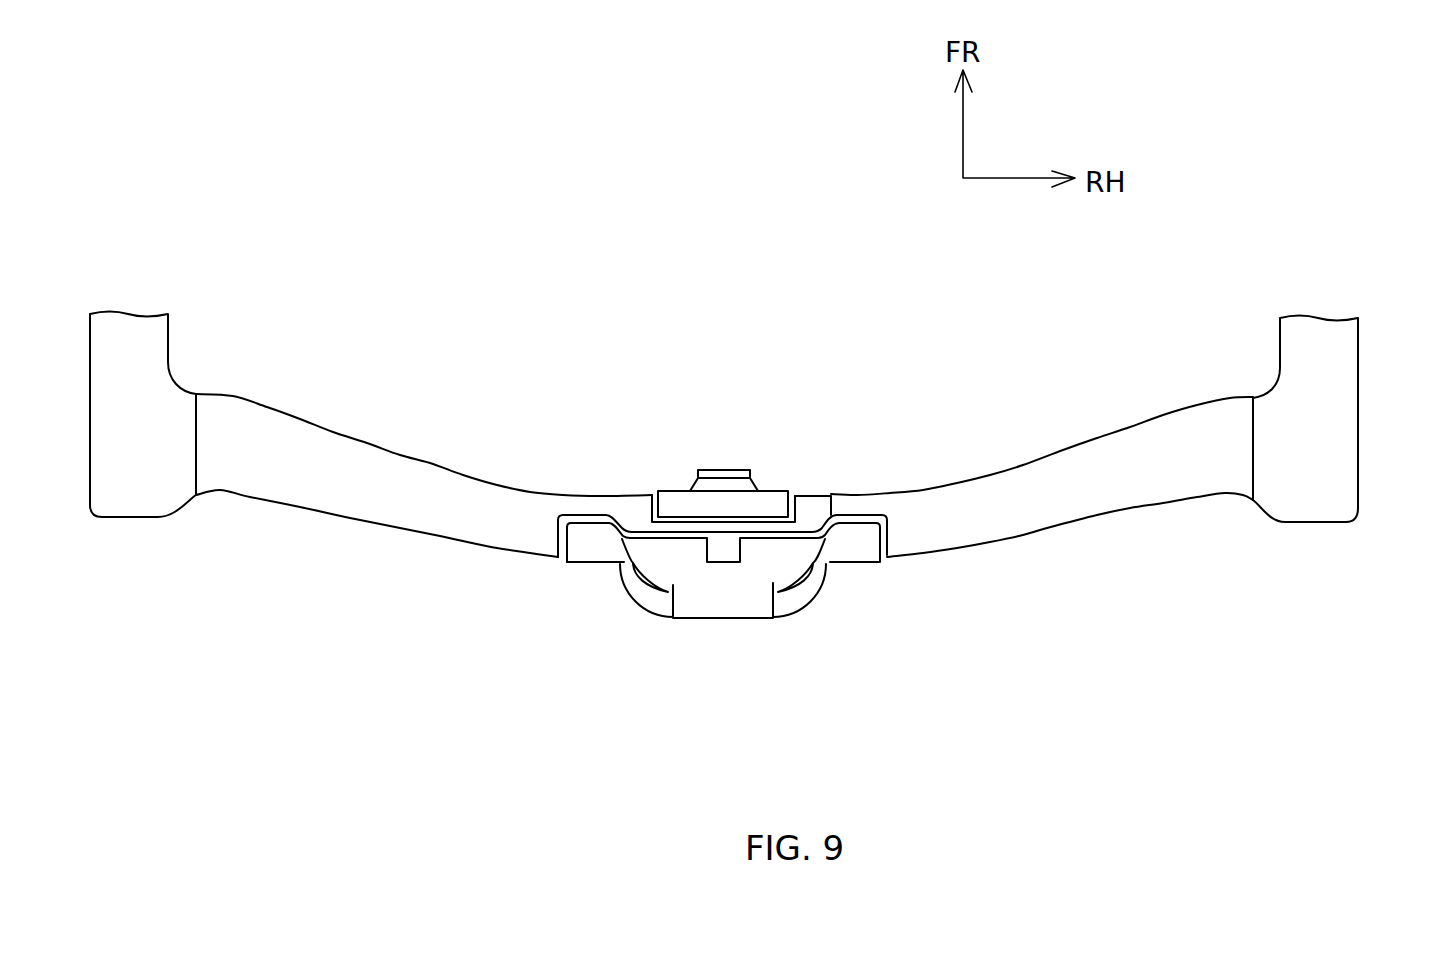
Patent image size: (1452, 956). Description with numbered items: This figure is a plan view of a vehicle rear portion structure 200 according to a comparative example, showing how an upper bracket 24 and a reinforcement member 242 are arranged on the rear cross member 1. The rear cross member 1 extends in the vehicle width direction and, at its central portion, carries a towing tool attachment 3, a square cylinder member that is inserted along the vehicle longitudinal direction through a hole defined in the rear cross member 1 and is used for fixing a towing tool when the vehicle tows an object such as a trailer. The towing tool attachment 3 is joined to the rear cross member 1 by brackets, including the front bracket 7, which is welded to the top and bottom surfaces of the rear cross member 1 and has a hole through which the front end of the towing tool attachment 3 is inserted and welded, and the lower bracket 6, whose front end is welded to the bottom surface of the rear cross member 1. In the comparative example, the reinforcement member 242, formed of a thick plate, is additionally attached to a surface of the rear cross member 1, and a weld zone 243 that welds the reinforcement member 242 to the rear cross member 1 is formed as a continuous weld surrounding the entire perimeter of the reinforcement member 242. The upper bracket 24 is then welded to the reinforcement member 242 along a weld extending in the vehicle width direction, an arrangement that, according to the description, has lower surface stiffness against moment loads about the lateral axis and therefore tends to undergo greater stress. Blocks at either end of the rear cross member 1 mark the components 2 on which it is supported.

The rear cross member 1 is at (1164, 446).
The bushing / mounting block 2 is at (1373, 493).
The towing tool attachment 3 is at (727, 470).
The lower bracket 6 is at (633, 590).
The front bracket 7 is at (768, 508).
The upper bracket 24 is at (715, 600).
The reinforcement member 242 is at (858, 550).
The weld zone 243 is at (833, 506).
The vehicle rear portion structure 200 is at (770, 515).